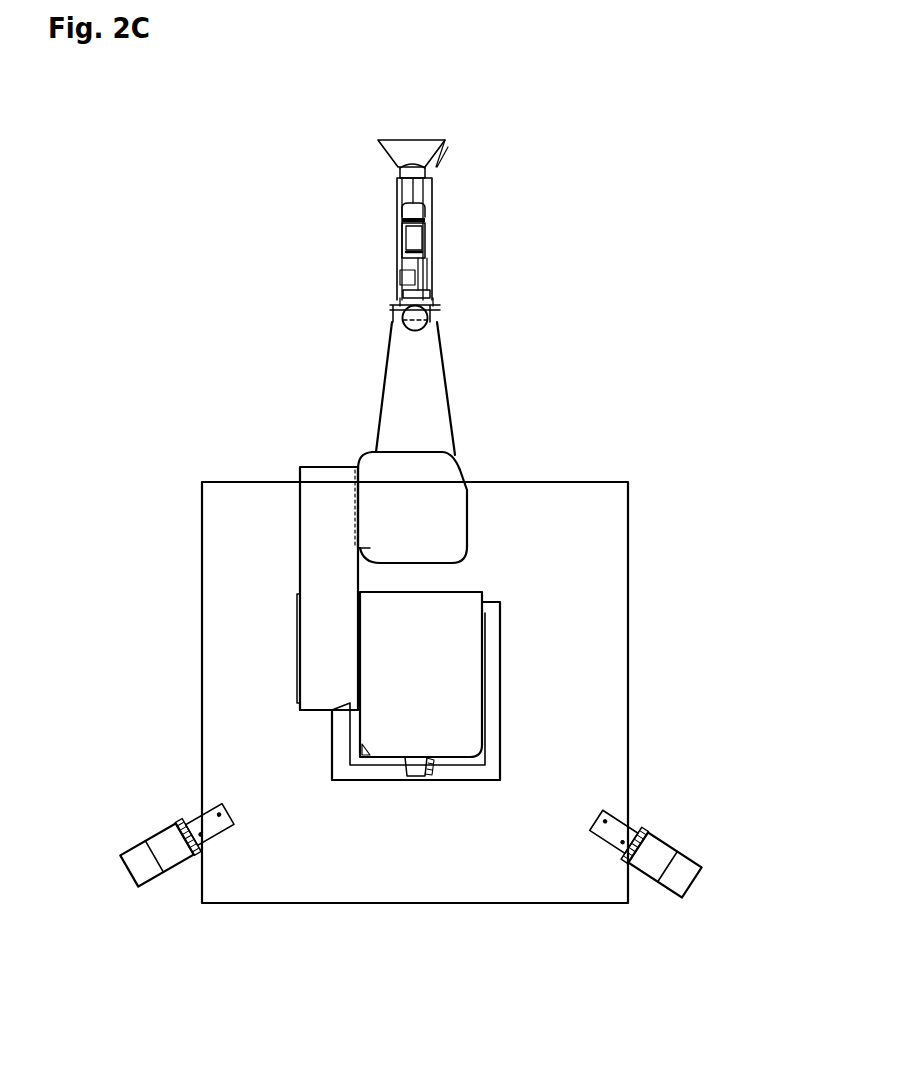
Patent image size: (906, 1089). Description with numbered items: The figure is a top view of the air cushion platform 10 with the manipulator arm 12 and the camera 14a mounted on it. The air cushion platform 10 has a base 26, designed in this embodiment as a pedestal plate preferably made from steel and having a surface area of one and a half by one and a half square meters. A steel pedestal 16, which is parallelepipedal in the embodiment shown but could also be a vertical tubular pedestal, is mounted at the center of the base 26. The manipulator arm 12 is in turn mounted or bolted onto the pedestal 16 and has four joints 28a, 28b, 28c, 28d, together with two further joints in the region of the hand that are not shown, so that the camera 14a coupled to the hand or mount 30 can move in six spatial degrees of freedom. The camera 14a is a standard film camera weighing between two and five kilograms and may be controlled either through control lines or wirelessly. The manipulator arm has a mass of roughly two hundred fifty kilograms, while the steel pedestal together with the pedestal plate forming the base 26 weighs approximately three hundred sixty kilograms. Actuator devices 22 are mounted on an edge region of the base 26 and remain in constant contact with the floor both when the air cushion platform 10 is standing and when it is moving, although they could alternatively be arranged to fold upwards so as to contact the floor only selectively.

The air cushion platform 10 is at (666, 613).
The manipulator arm 12 is at (507, 449).
The camera 14a is at (474, 224).
The steel pedestal 16 is at (497, 700).
The actuator devices 22 is at (153, 879).
The base 26 is at (612, 538).
The joint 28a is at (438, 306).
The joint 28b is at (358, 470).
The joint 28c is at (358, 644).
The joint 28d is at (358, 727).
The hand or mount 30 is at (432, 264).